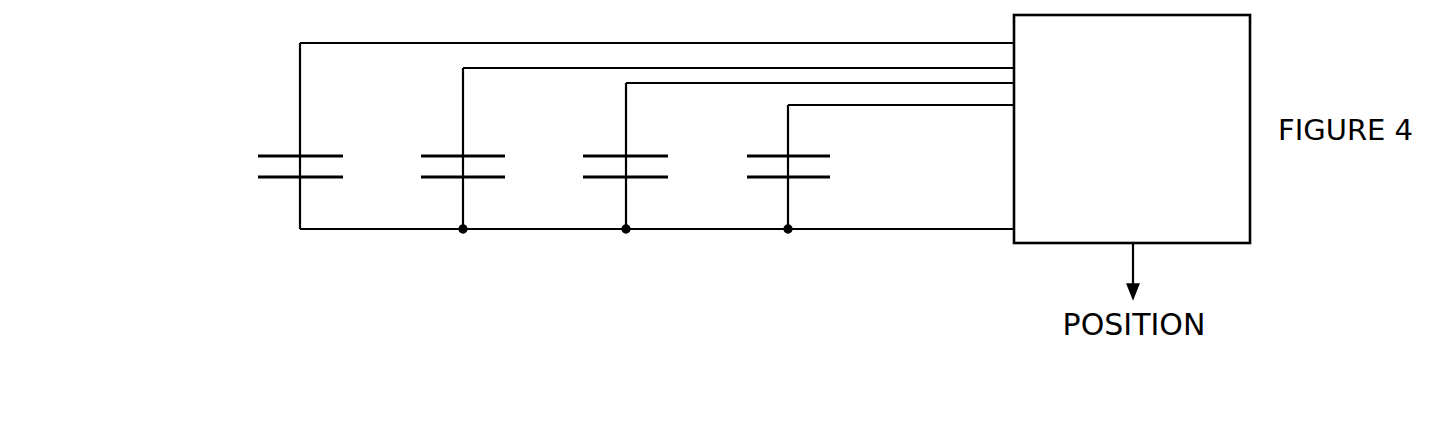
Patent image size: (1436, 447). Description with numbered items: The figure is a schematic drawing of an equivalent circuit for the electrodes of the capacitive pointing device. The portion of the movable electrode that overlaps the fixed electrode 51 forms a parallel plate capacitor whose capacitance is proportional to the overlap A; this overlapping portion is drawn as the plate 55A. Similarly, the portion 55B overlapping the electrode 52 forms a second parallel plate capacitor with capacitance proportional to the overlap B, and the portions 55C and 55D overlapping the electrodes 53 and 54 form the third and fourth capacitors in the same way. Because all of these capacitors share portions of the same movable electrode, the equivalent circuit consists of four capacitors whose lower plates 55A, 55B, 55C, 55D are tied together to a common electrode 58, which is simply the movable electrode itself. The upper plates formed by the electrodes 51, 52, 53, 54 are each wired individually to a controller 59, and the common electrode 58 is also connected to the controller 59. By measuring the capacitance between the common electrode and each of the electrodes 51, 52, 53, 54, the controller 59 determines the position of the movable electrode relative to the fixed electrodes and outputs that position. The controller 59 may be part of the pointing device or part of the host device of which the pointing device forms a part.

The electrode 51 is at (268, 155).
The electrode 52 is at (431, 155).
The electrode 53 is at (593, 155).
The electrode 54 is at (756, 155).
The portion of electrode 55 overlapping electrode 51 55A is at (268, 178).
The portion of electrode 55 overlapping electrode 52 55B is at (431, 178).
The portion of electrode 55 overlapping electrode 53 55C is at (593, 178).
The portion of electrode 55 overlapping electrode 54 55D is at (756, 178).
The common electrode 58 is at (890, 230).
The controller 59 is at (1120, 178).